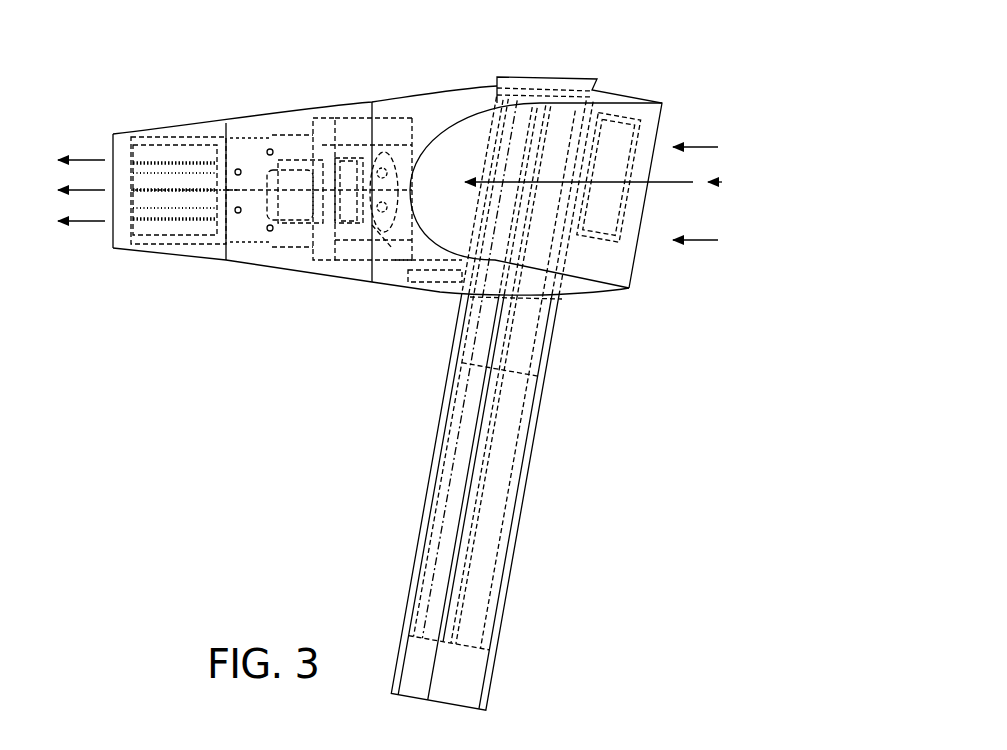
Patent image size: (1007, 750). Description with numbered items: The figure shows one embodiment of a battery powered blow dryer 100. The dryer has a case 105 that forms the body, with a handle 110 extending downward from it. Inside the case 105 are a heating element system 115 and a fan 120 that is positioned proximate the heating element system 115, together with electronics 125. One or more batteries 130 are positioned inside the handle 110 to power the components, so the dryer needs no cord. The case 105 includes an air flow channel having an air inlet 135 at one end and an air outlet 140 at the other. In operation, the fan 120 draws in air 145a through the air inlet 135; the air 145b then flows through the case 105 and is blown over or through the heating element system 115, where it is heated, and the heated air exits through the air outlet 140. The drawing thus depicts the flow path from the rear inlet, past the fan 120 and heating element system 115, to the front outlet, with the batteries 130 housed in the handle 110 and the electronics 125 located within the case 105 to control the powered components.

The battery powered blow dryer 100 is at (257, 375).
The case 105 is at (463, 85).
The handle 110 is at (527, 475).
The heating element system 115 is at (162, 187).
The fan 120 is at (383, 143).
The electronics 125 is at (608, 135).
The batteries 130 is at (467, 390).
The air inlet 135 is at (660, 125).
The air outlet 140 is at (112, 150).
The air 145a is at (722, 180).
The air 145b is at (88, 224).